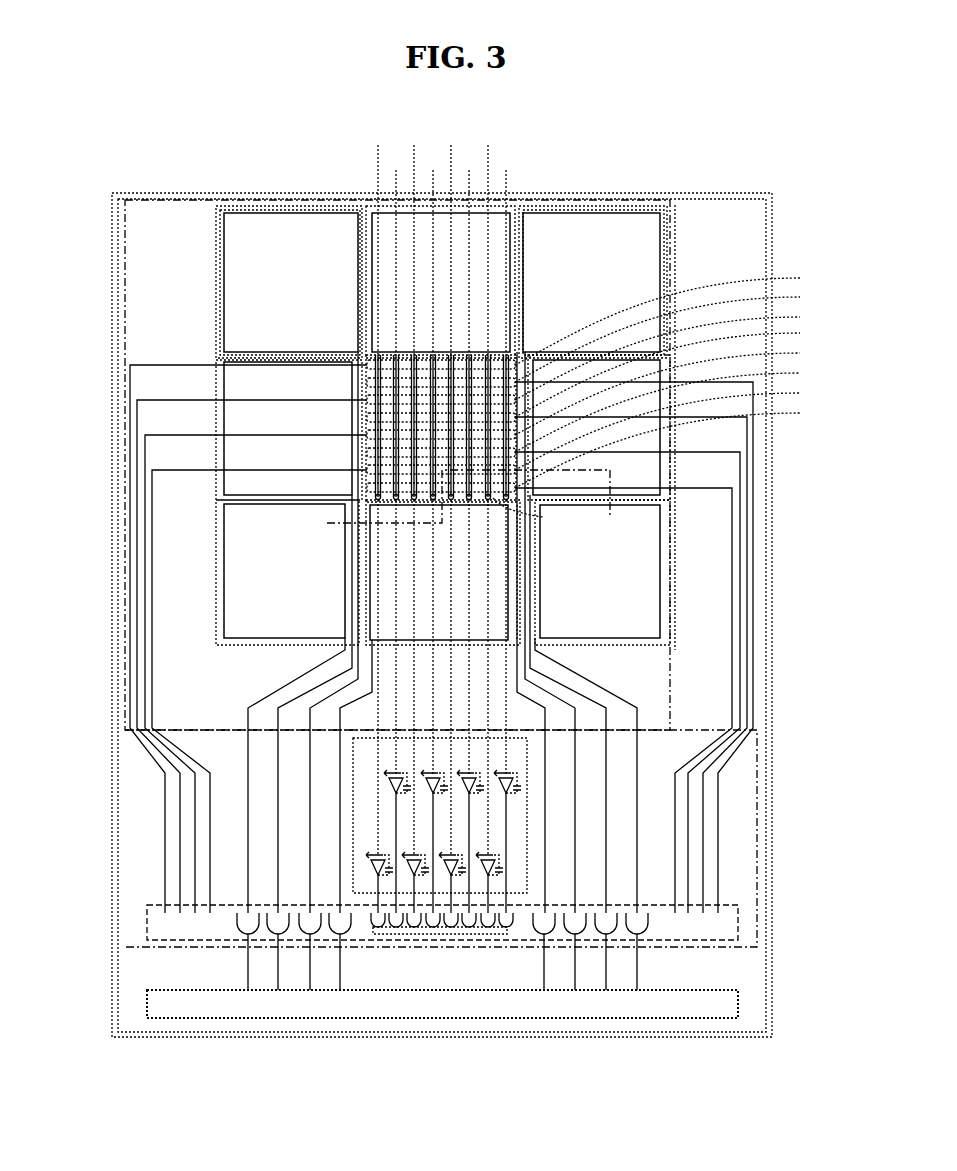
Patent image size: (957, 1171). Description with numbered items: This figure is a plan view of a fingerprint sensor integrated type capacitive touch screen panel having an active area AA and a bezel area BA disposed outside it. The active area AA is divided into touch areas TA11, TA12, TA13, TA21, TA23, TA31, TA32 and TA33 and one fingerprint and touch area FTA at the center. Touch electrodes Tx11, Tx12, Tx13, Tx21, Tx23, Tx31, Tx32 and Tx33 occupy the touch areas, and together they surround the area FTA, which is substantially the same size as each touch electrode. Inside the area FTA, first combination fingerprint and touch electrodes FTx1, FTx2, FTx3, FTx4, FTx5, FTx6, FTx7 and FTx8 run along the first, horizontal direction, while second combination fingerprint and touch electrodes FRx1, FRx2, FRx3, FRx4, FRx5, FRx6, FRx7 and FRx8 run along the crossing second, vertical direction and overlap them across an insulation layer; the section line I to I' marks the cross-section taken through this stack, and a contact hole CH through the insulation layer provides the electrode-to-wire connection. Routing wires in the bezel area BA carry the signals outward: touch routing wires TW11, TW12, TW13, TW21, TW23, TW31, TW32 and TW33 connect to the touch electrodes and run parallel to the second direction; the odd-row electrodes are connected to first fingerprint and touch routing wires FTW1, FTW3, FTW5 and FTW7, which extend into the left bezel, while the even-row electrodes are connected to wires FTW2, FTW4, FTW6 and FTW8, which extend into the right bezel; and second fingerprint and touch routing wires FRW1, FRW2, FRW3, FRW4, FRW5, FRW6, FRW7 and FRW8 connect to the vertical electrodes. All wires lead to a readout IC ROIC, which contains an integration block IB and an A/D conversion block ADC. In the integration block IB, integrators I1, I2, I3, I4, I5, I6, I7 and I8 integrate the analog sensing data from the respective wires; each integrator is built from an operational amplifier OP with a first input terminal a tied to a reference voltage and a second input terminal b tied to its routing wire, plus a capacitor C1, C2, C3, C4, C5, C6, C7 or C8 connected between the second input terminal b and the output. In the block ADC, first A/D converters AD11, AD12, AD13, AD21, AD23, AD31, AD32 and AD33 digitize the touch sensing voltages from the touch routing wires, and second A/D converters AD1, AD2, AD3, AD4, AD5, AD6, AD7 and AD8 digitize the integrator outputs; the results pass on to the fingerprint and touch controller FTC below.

The bezel area BA is at (725, 196).
The active area AA is at (668, 200).
The readout IC ROIC is at (758, 890).
The touch area TA11 is at (279, 211).
The touch area TA12 is at (388, 208).
The touch area TA13 is at (596, 211).
The touch area TA21 is at (215, 424).
The touch area TA23 is at (672, 436).
The touch area TA31 is at (215, 580).
The touch area TA32 is at (363, 566).
The touch area TA33 is at (672, 580).
The fingerprint and touch area FTA is at (366, 421).
The touch electrode Tx11 is at (291, 282).
The touch electrode Tx12 is at (441, 282).
The touch electrode Tx13 is at (591, 282).
The touch electrode Tx21 is at (288, 428).
The touch electrode Tx23 is at (596, 427).
The touch electrode Tx31 is at (284, 571).
The touch electrode Tx32 is at (439, 572).
The touch electrode Tx33 is at (600, 571).
The second combination fingerprint and touch electrode FRx1 is at (381, 314).
The second combination fingerprint and touch electrode FRx2 is at (398, 325).
The second combination fingerprint and touch electrode FRx3 is at (418, 314).
The second combination fingerprint and touch electrode FRx4 is at (435, 325).
The second combination fingerprint and touch electrode FRx5 is at (454, 314).
The second combination fingerprint and touch electrode FRx6 is at (472, 325).
The second combination fingerprint and touch electrode FRx7 is at (491, 314).
The second combination fingerprint and touch electrode FRx8 is at (509, 325).
The first combination fingerprint and touch electrode FTx1 is at (600, 320).
The first combination fingerprint and touch electrode FTx2 is at (600, 338).
The first combination fingerprint and touch electrode FTx3 is at (600, 357).
The first combination fingerprint and touch electrode FTx4 is at (600, 374).
The first combination fingerprint and touch electrode FTx5 is at (600, 392).
The first combination fingerprint and touch electrode FTx6 is at (600, 411).
The first combination fingerprint and touch electrode FTx7 is at (600, 430).
The first combination fingerprint and touch electrode FTx8 is at (600, 449).
The first fingerprint and touch routing wire FTW1 is at (165, 797).
The first fingerprint and touch routing wire FTW2 is at (718, 797).
The first fingerprint and touch routing wire FTW3 is at (180, 818).
The first fingerprint and touch routing wire FTW4 is at (703, 818).
The first fingerprint and touch routing wire FTW5 is at (195, 838).
The first fingerprint and touch routing wire FTW6 is at (688, 838).
The first fingerprint and touch routing wire FTW7 is at (210, 858).
The first fingerprint and touch routing wire FTW8 is at (675, 858).
The touch routing wire TW11 is at (333, 694).
The touch routing wire TW12 is at (545, 708).
The touch routing wire TW13 is at (556, 692).
The touch routing wire TW21 is at (322, 683).
The touch routing wire TW23 is at (566, 681).
The touch routing wire TW31 is at (313, 670).
The touch routing wire TW32 is at (340, 708).
The touch routing wire TW33 is at (575, 668).
The section line I is at (461, 500).
The section line end I' is at (616, 523).
The contact hole CH is at (528, 511).
The second fingerprint and touch routing wire FRW1 is at (384, 677).
The second fingerprint and touch routing wire FRW2 is at (401, 637).
The second fingerprint and touch routing wire FRW3 is at (420, 677).
The second fingerprint and touch routing wire FRW4 is at (438, 637).
The second fingerprint and touch routing wire FRW5 is at (455, 677).
The second fingerprint and touch routing wire FRW6 is at (475, 637).
The second fingerprint and touch routing wire FRW7 is at (491, 677).
The second fingerprint and touch routing wire FRW8 is at (511, 637).
The integration block IB is at (530, 822).
The integrator I1 is at (374, 867).
The integrator I2 is at (393, 825).
The integrator I3 is at (410, 867).
The integrator I4 is at (430, 825).
The integrator I5 is at (447, 867).
The integrator I6 is at (466, 825).
The integrator I7 is at (484, 867).
The integrator I8 is at (503, 825).
The capacitor C1 is at (387, 874).
The capacitor C2 is at (405, 792).
The capacitor C3 is at (423, 874).
The capacitor C4 is at (442, 792).
The capacitor C5 is at (460, 874).
The capacitor C6 is at (478, 792).
The capacitor C7 is at (497, 874).
The capacitor C8 is at (515, 792).
The operational amplifier OP is at (361, 871).
The switch terminal a is at (433, 806).
The second input terminal b is at (451, 806).
The A/D conversion block ADC is at (739, 918).
The second A/D converter AD1 is at (374, 930).
The second A/D converter AD2 is at (394, 930).
The second A/D converter AD3 is at (413, 930).
The second A/D converter AD4 is at (432, 930).
The second A/D converter AD5 is at (450, 930).
The second A/D converter AD6 is at (469, 930).
The second A/D converter AD7 is at (488, 930).
The second A/D converter AD8 is at (507, 930).
The first A/D converter AD11 is at (302, 934).
The first A/D converter AD12 is at (552, 934).
The first A/D converter AD13 is at (583, 934).
The first A/D converter AD21 is at (270, 934).
The first A/D converter AD23 is at (614, 934).
The first A/D converter AD31 is at (240, 934).
The first A/D converter AD32 is at (333, 934).
The first A/D converter AD33 is at (645, 934).
The fingerprint and touch controller FTC is at (739, 1001).